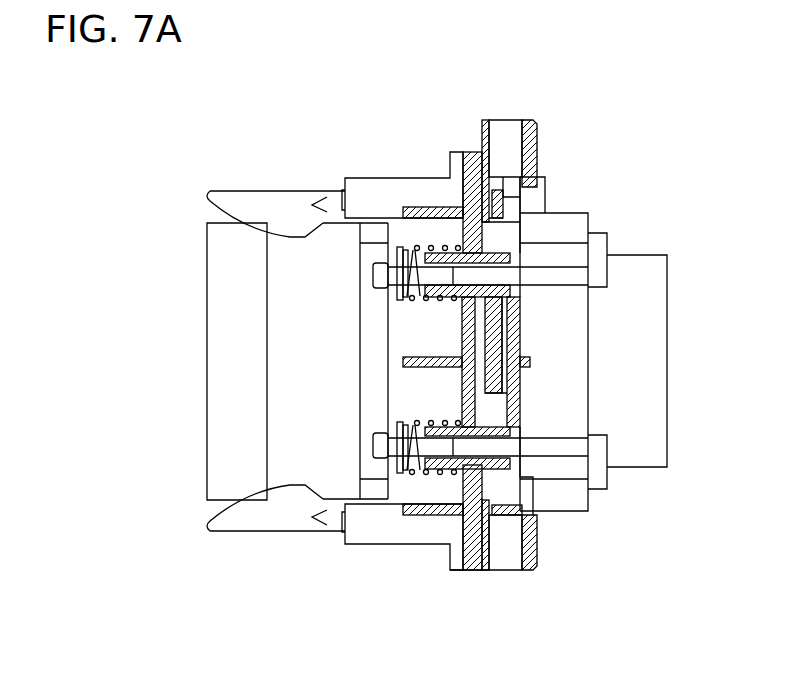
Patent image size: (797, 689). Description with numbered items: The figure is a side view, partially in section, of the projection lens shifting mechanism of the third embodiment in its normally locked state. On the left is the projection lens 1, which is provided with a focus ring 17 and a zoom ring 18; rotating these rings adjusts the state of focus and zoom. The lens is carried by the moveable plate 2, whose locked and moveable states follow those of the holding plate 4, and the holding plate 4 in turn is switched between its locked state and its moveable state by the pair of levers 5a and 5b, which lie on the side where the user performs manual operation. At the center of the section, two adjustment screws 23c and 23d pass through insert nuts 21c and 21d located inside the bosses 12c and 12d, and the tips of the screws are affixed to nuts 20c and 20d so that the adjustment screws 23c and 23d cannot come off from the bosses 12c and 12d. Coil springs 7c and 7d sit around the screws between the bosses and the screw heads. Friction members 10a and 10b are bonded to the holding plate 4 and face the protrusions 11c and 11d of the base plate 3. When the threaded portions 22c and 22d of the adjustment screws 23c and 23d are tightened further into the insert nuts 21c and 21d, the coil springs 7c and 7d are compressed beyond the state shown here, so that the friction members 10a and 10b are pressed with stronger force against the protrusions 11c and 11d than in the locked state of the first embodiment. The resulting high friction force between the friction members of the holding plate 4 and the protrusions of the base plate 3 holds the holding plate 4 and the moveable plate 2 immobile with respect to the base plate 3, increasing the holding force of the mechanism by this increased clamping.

The projection lens 1 is at (375, 325).
The moveable plate 2 is at (577, 223).
The base plate 3 is at (525, 155).
The holding plate 4 is at (470, 162).
The lever 5a is at (228, 200).
The lever 5b is at (227, 520).
The coil spring 7c is at (428, 247).
The coil spring 7d is at (428, 475).
The friction member 10a is at (482, 140).
The friction member 10b is at (482, 572).
The protrusion 11c is at (485, 150).
The protrusion 11d is at (493, 572).
The boss 12c is at (388, 212).
The boss 12d is at (388, 510).
The focus ring 17 is at (230, 257).
The zoom ring 18 is at (283, 437).
The nut 20c is at (528, 215).
The nut 20d is at (530, 490).
The insert nut 21c is at (405, 248).
The insert nut 21d is at (405, 474).
The threaded portion 22c is at (412, 275).
The threaded portion 22d is at (412, 447).
The adjustment screw 23c is at (387, 258).
The adjustment screw 23d is at (373, 447).